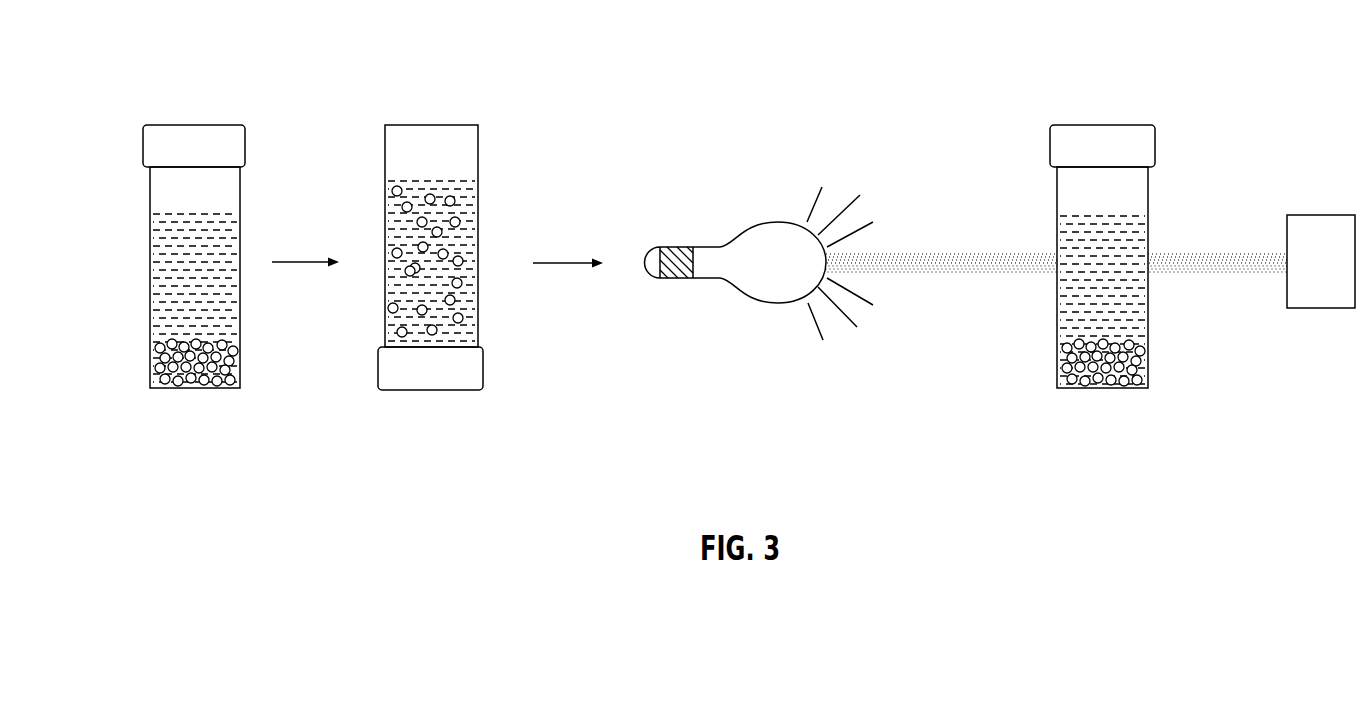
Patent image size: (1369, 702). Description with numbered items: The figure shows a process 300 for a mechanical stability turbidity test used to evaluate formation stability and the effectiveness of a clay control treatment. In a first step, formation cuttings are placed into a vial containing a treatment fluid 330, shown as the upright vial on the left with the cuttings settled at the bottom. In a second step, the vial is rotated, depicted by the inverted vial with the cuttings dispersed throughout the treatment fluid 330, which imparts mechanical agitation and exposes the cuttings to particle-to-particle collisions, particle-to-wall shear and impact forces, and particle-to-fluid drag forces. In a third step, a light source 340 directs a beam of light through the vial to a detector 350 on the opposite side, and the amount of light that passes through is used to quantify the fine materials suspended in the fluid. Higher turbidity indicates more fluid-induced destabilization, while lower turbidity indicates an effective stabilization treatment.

The process 300 is at (130, 95).
The treatment fluid 330 is at (150, 243).
The light source 340 is at (768, 296).
The detector 350 is at (1322, 215).